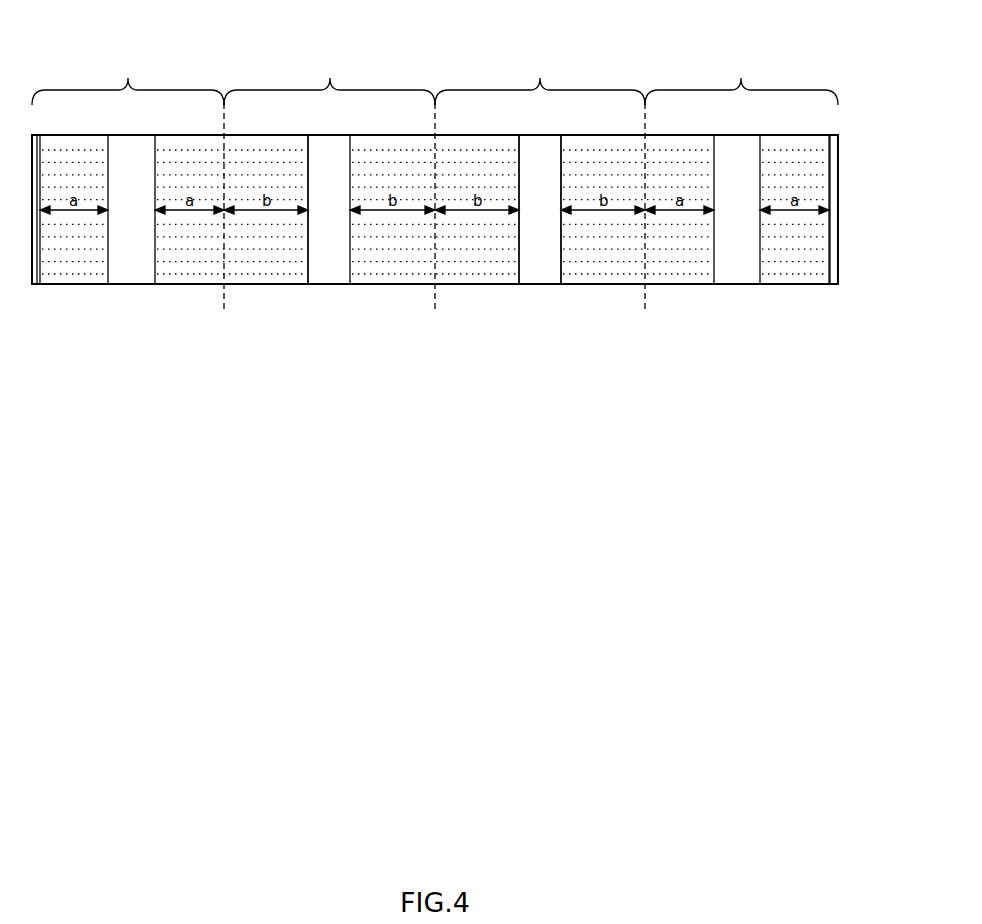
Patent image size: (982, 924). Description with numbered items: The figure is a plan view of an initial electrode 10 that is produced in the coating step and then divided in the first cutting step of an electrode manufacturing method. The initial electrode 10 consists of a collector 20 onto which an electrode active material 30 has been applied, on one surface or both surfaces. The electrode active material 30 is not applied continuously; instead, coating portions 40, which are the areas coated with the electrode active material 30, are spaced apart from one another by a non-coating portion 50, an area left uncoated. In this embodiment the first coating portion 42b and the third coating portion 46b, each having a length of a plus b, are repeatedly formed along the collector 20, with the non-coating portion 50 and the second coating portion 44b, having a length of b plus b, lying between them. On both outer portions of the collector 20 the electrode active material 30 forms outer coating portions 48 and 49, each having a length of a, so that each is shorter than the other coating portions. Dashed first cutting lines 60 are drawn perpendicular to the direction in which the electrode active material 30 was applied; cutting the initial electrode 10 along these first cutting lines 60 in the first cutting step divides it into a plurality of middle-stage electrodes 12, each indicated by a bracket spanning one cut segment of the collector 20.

The initial electrode 10 is at (786, 69).
The middle-stage electrode 12 is at (435, 79).
The collector 20 is at (838, 207).
The electrode active material 30 is at (303, 147).
The coating portion 40 is at (598, 348).
The first coating portion 42b is at (190, 278).
The second coating portion 44b is at (400, 278).
The third coating portion 46b is at (598, 278).
The outer coating portion 48 is at (73, 278).
The outer coating portion 49 is at (796, 278).
The non-coating portion 50 is at (540, 278).
The first cutting line 60 is at (224, 120).